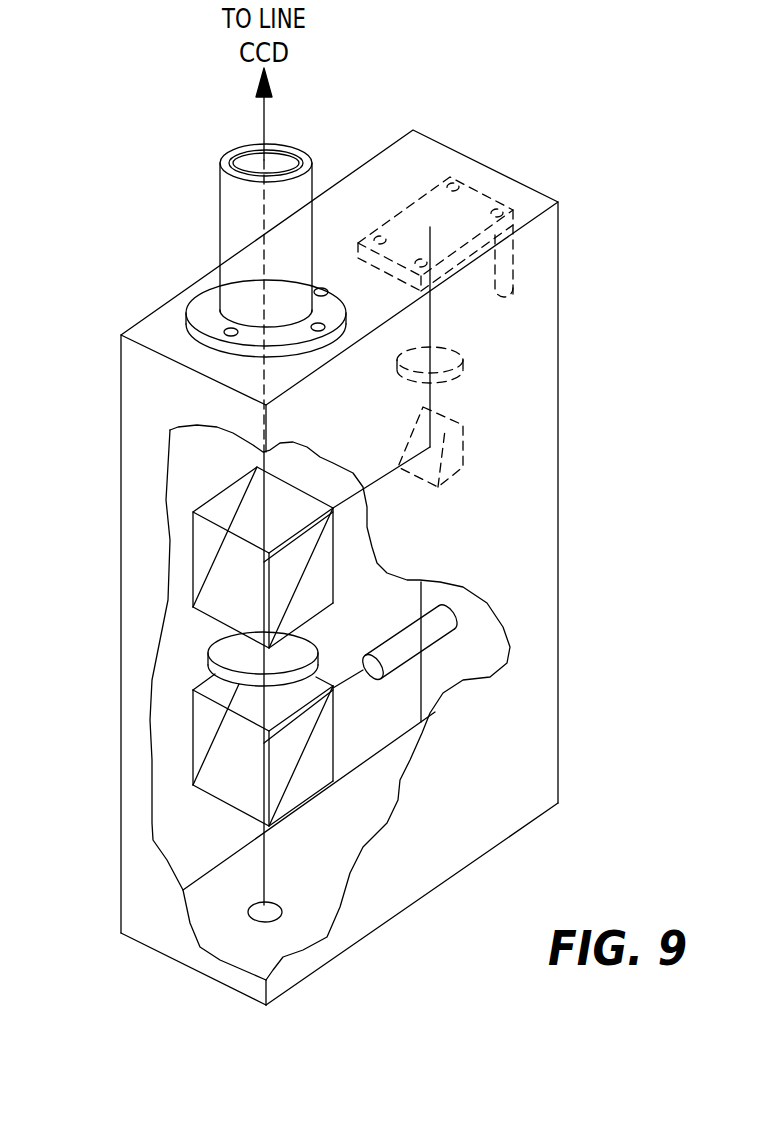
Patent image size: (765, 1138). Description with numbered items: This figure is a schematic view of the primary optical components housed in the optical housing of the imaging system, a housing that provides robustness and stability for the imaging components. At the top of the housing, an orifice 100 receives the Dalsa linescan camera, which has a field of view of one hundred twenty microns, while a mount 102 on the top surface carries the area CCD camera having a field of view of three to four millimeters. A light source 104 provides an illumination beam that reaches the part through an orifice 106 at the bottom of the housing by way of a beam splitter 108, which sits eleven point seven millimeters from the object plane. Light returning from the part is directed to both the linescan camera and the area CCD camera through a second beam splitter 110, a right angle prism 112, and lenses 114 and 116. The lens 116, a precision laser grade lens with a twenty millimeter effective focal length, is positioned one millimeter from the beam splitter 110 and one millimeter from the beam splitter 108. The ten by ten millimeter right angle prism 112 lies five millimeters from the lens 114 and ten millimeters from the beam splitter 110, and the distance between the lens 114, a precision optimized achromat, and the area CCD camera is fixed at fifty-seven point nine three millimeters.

The orifice 100 is at (248, 152).
The mount 102 is at (465, 217).
The light source 104 is at (437, 632).
The orifice 106 is at (279, 910).
The beam splitter 108 is at (223, 763).
The beam splitter 110 is at (233, 510).
The right angle prism 112 is at (467, 455).
The lens 114 is at (447, 358).
The lens 116 is at (227, 660).